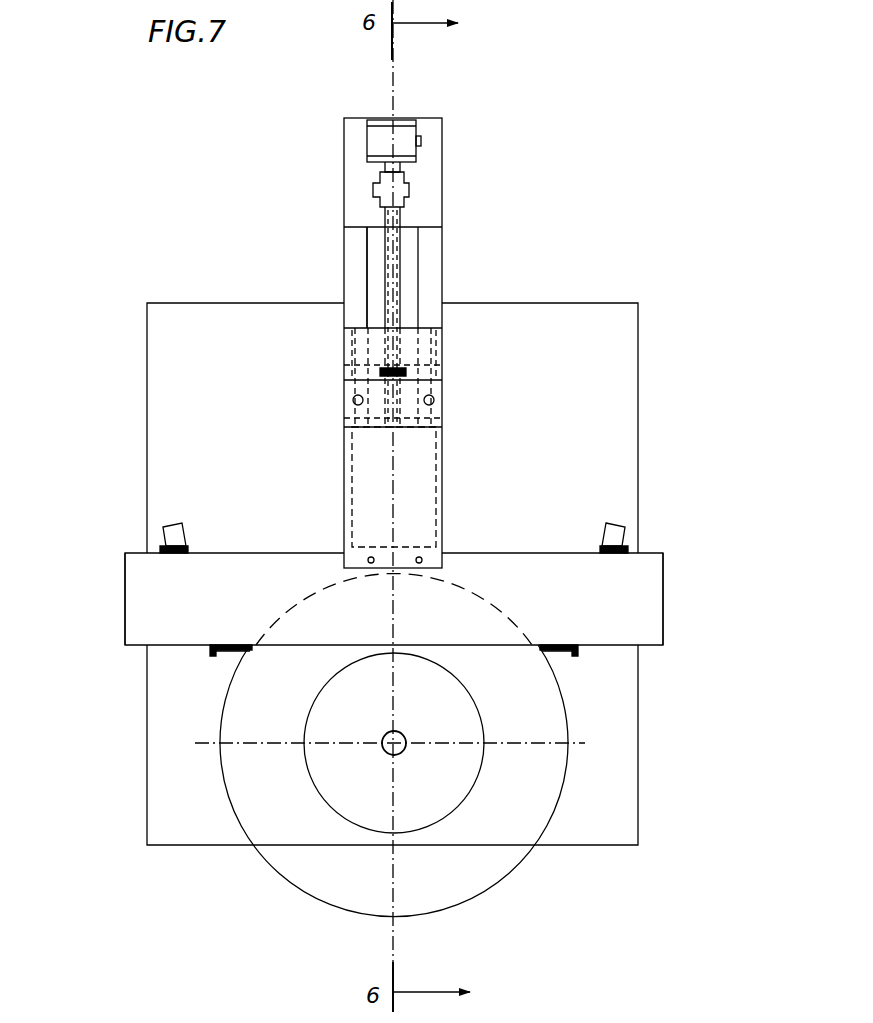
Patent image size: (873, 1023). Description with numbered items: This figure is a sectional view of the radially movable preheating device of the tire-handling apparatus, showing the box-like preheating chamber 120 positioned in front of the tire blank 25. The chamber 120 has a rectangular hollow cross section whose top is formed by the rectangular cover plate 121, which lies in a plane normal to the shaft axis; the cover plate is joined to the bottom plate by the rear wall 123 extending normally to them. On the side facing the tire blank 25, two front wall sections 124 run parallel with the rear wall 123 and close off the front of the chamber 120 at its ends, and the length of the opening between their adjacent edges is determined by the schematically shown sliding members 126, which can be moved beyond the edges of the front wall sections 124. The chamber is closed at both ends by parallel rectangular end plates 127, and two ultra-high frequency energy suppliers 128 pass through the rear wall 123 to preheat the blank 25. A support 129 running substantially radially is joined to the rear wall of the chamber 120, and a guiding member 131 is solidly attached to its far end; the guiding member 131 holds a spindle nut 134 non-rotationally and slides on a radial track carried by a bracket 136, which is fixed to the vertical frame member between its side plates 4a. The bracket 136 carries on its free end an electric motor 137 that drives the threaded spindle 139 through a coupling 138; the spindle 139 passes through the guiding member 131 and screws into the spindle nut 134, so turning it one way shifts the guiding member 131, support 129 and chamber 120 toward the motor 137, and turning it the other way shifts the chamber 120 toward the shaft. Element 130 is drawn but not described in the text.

The side plates 4a is at (356, 270).
The tire blank 25 is at (320, 870).
The preheating chamber 120 is at (618, 606).
The cover plate 121 is at (633, 568).
The rear wall 123 is at (253, 548).
The front wall sections 124 is at (175, 647).
The sliding members 126 is at (222, 650).
The end plates 127 is at (125, 603).
The ultra-high frequency energy suppliers 128 is at (167, 535).
The support 129 is at (375, 485).
The mounting block 130 is at (436, 398).
The guiding member 131 is at (398, 370).
The spindle nut 134 is at (423, 368).
The bracket 136 is at (440, 170).
The electric motor 137 is at (400, 130).
The coupling 138 is at (410, 187).
The threaded spindle 139 is at (400, 232).